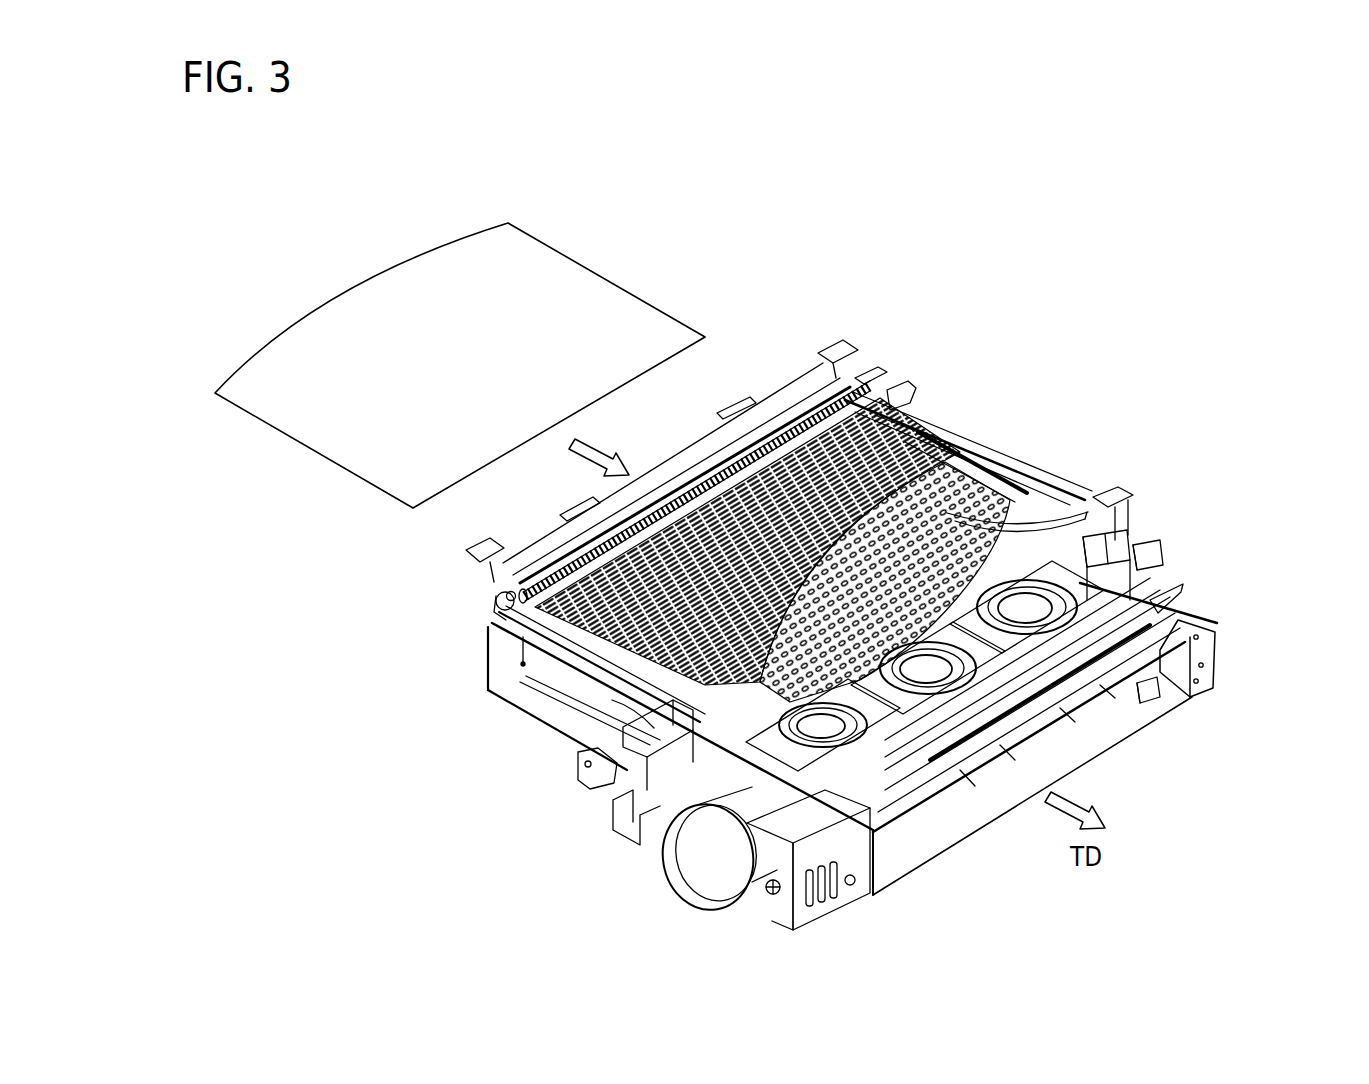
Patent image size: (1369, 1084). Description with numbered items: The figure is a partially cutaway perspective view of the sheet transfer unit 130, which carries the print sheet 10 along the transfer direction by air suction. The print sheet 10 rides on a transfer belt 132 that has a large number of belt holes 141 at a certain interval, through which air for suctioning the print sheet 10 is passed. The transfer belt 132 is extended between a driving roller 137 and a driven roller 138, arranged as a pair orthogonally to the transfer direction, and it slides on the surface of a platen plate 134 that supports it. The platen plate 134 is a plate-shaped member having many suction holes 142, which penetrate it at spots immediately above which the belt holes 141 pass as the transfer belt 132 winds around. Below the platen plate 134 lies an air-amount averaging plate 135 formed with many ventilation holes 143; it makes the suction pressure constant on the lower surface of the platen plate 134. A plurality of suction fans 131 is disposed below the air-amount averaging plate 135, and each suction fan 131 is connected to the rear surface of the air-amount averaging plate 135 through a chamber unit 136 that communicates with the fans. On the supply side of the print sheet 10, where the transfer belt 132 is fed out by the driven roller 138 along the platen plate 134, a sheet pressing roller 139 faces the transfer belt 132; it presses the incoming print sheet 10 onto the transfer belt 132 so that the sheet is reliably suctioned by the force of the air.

The print sheet 10 is at (578, 277).
The sheet transfer unit 130 is at (1073, 300).
The suction fan 131 is at (813, 733).
The transfer belt 132 is at (890, 430).
The platen plate 134 is at (1007, 473).
The air-amount averaging plate 135 is at (1060, 503).
The chamber unit 136 is at (913, 777).
The driving roller 137 is at (880, 833).
The driven roller 138 is at (495, 606).
The sheet pressing roller 139 is at (697, 497).
The belt holes 141 is at (487, 688).
The suction holes 142 is at (607, 690).
The ventilation holes 143 is at (633, 777).